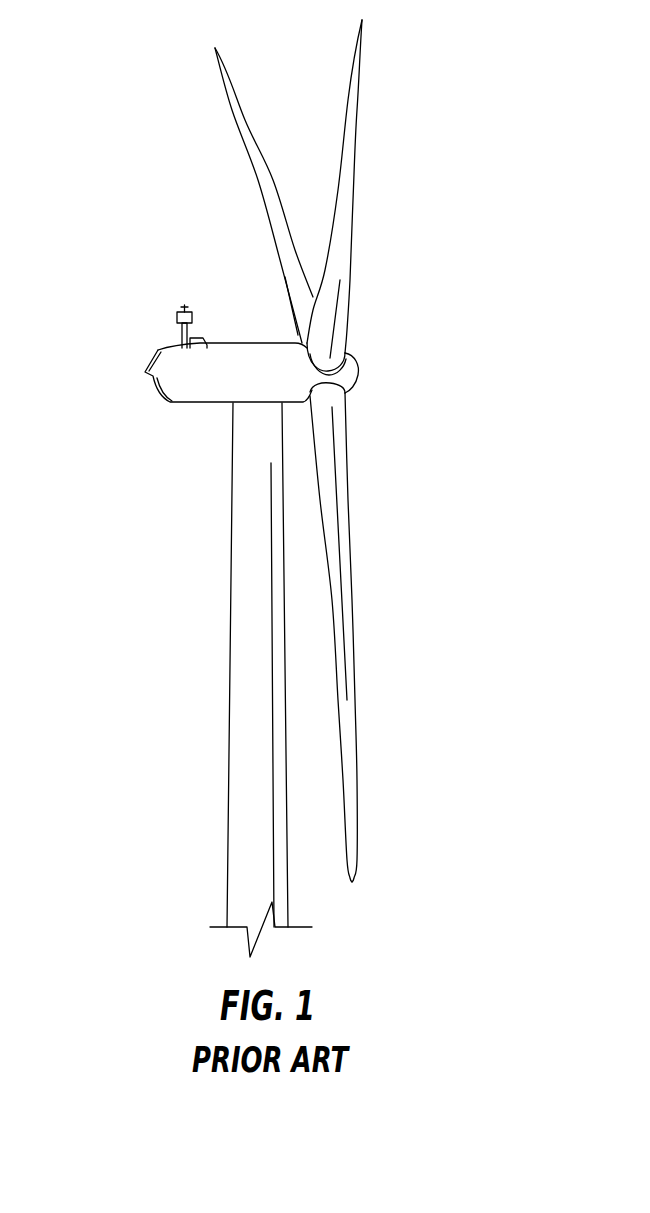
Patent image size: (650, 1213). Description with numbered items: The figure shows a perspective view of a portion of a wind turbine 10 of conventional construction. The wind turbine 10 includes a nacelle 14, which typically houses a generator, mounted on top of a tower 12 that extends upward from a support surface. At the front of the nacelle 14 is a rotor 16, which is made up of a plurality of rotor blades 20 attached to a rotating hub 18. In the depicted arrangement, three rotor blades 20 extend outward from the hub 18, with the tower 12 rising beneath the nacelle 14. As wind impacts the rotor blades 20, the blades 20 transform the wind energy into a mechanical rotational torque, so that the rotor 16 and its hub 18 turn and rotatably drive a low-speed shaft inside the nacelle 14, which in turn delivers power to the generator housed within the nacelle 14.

The wind turbine 10 is at (118, 138).
The tower 12 is at (233, 722).
The nacelle 14 is at (197, 404).
The rotor 16 is at (450, 271).
The rotating hub 18 is at (360, 378).
The rotor blades 20 is at (267, 172).